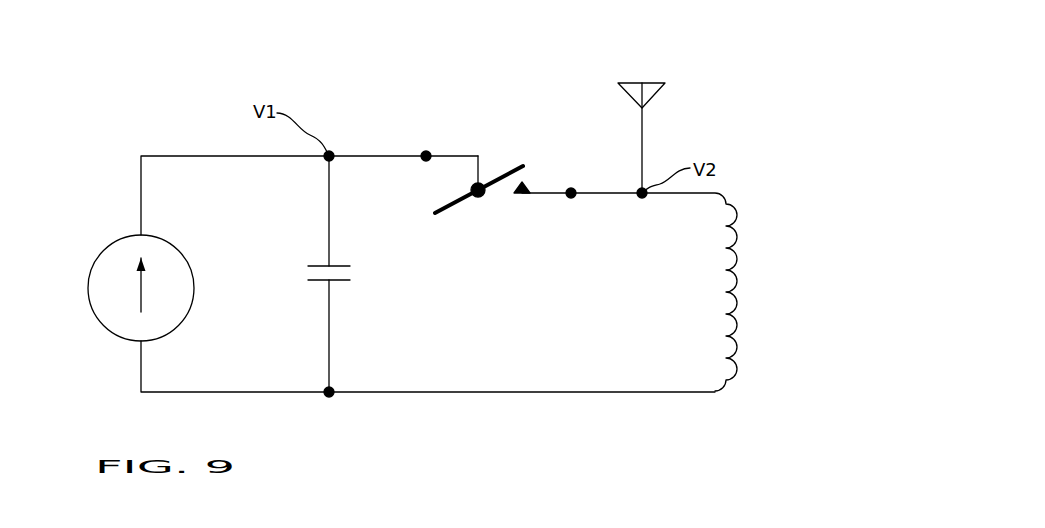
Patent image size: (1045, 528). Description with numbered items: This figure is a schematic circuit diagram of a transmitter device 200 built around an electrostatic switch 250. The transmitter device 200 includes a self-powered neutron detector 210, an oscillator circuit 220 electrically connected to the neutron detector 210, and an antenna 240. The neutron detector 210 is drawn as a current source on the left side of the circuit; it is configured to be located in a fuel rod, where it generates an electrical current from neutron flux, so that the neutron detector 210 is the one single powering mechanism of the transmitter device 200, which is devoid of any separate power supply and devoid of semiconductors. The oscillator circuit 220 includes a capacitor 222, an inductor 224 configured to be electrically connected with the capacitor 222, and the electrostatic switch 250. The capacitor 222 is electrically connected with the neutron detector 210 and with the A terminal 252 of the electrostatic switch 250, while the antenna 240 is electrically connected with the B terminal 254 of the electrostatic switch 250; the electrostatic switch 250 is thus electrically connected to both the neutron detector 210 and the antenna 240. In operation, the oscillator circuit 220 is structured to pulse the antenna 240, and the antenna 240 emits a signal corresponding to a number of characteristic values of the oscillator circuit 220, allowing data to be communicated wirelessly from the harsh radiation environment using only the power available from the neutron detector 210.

The transmitter device 200 is at (102, 160).
The self-powered neutron detector 210 is at (107, 337).
The oscillator circuit 220 is at (718, 422).
The capacitor 222 is at (345, 287).
The inductor 224 is at (738, 283).
The antenna 240 is at (653, 78).
The electrostatic switch 250 is at (488, 212).
The A terminal 252 is at (418, 143).
The B terminal 254 is at (574, 187).